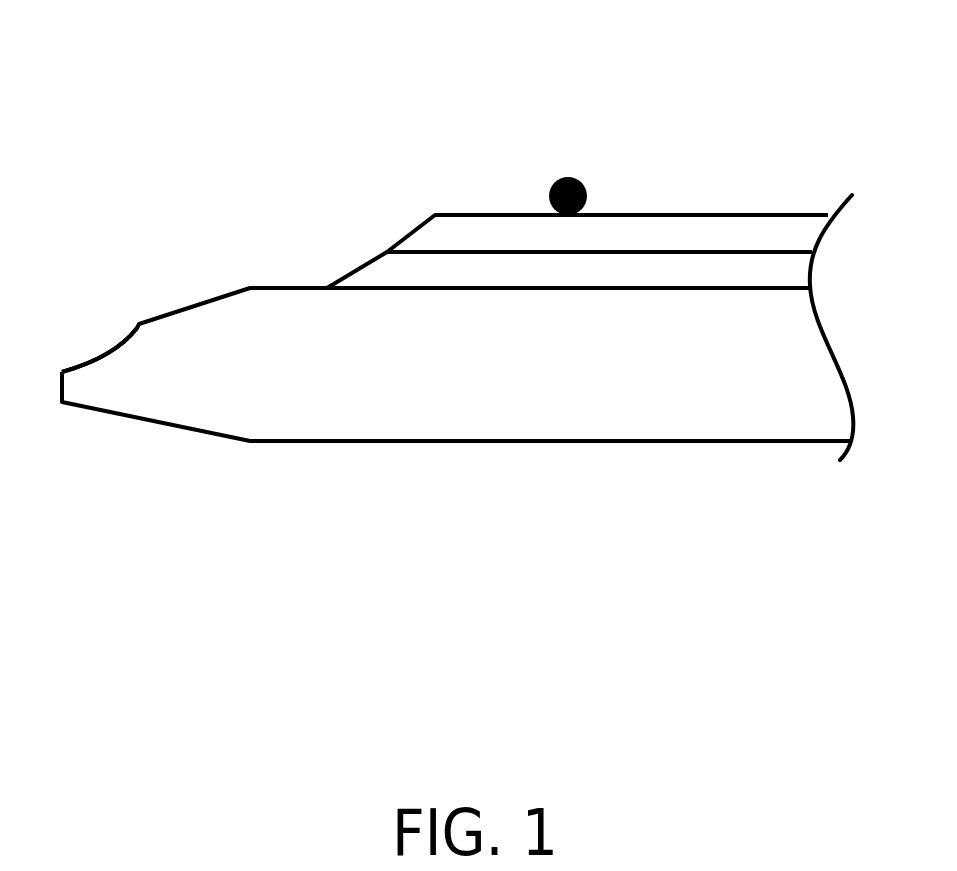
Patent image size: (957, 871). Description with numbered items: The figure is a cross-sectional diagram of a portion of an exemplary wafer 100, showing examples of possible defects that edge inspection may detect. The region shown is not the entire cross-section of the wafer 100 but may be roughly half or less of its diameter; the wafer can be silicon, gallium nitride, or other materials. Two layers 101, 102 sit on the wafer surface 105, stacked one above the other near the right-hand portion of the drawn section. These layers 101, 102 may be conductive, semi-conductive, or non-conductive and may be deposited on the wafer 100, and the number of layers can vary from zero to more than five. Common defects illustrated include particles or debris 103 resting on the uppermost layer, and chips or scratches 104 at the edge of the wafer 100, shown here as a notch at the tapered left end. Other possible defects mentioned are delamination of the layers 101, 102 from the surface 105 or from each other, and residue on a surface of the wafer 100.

The wafer 100 is at (525, 378).
The layer 101 is at (618, 284).
The layer 102 is at (618, 246).
The particles or debris 103 is at (591, 165).
The chips or scratches 104 is at (94, 292).
The wafer surface 105 is at (283, 287).